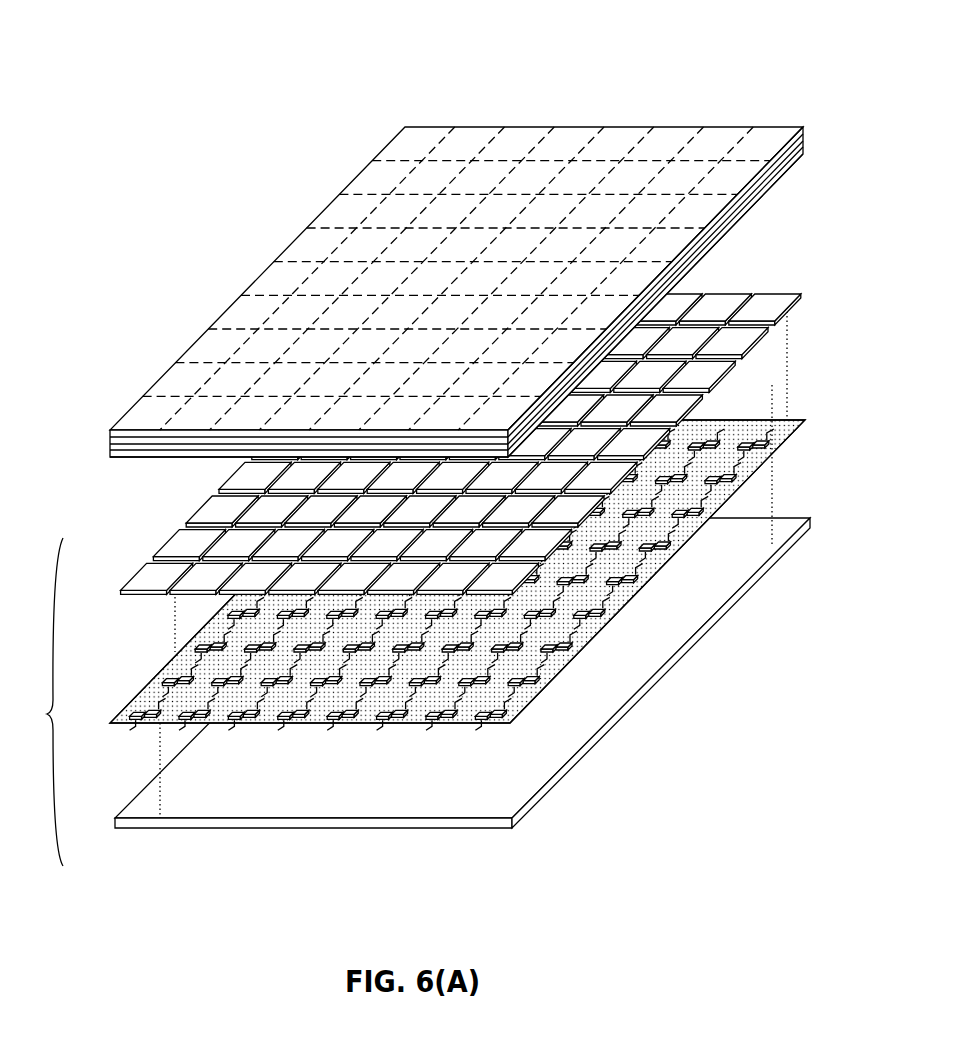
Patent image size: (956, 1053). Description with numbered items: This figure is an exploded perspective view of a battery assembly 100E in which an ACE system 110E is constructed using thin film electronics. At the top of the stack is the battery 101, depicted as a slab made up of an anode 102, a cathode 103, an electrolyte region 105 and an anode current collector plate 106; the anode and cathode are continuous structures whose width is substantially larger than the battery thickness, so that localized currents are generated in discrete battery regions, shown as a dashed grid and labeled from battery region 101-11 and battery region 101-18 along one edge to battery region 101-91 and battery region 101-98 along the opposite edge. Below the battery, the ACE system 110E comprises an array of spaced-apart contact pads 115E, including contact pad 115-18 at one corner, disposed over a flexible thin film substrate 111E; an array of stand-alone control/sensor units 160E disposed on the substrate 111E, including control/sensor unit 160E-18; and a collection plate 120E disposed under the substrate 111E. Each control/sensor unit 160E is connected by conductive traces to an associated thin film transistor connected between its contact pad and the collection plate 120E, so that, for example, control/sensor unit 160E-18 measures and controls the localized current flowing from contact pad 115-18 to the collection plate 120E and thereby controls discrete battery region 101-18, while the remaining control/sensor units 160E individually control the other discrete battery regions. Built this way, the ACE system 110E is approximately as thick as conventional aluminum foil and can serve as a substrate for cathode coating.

The battery assembly 100E is at (178, 66).
The battery 101 is at (433, 277).
The anode current collector plate 106 is at (110, 434).
The anode 102 is at (110, 441).
The electrolyte region 105 is at (110, 447).
The cathode 103 is at (50, 375).
The discrete battery region 101-11 is at (410, 142).
The discrete battery region 101-18 is at (775, 137).
The discrete battery region 101-91 is at (150, 408).
The discrete battery region 101-98 is at (493, 418).
The ACE system 110E is at (435, 564).
The substrate 111E is at (465, 552).
The contact pads 115E is at (455, 428).
The contact pad 115-18 is at (768, 302).
The control/sensor units 160E is at (473, 552).
The control/sensor unit 160E-18 is at (772, 408).
The collection plate 120E is at (122, 822).